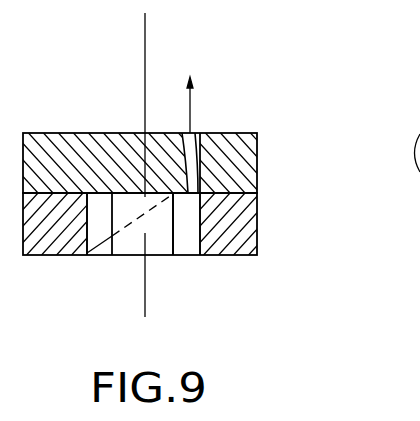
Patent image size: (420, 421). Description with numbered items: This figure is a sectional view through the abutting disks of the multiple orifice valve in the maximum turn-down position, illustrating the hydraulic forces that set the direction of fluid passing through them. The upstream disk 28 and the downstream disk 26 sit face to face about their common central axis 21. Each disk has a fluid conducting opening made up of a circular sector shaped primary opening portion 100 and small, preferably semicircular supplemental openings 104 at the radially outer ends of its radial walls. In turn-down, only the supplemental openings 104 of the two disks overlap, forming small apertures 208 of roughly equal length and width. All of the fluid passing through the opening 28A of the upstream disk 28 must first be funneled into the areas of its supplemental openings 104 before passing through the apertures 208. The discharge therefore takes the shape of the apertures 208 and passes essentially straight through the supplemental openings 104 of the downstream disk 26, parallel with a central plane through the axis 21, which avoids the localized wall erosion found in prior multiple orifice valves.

The common central axis 21 is at (143, 47).
The downstream disk member 26 is at (262, 171).
The upstream disk member 28 is at (265, 229).
The fluid conducting opening of disk 28 28A is at (158, 247).
The primary opening portion 100 is at (132, 252).
The supplemental openings 104 is at (196, 132).
The apertures 208 is at (182, 133).